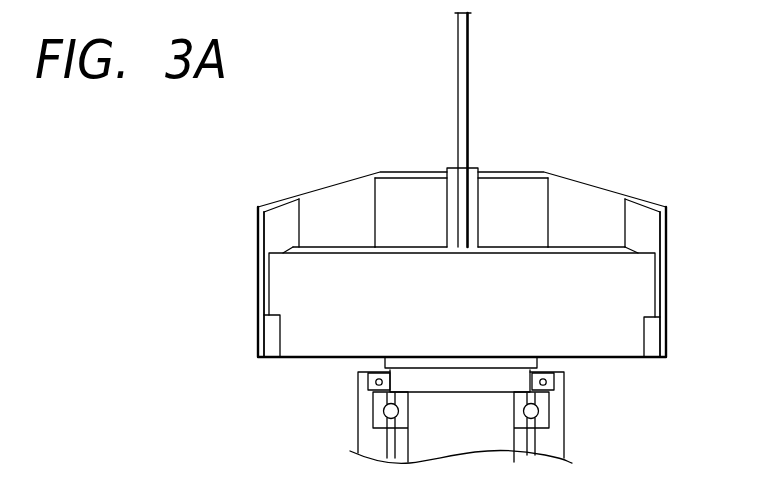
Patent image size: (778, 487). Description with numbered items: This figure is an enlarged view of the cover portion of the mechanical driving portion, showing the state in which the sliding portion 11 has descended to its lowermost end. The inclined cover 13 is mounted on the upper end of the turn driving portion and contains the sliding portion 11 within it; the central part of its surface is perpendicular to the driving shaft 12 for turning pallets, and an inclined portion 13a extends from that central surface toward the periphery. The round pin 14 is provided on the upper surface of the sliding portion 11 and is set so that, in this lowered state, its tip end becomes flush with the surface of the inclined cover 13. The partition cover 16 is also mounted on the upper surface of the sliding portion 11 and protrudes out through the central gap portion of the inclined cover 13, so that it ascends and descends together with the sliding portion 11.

The sliding portion 11 is at (638, 290).
The driving shaft 12 is at (498, 440).
The inclined cover 13 is at (513, 160).
The inclined portion 13a is at (647, 193).
The round pin 14 is at (590, 198).
The partition cover 16 is at (470, 47).